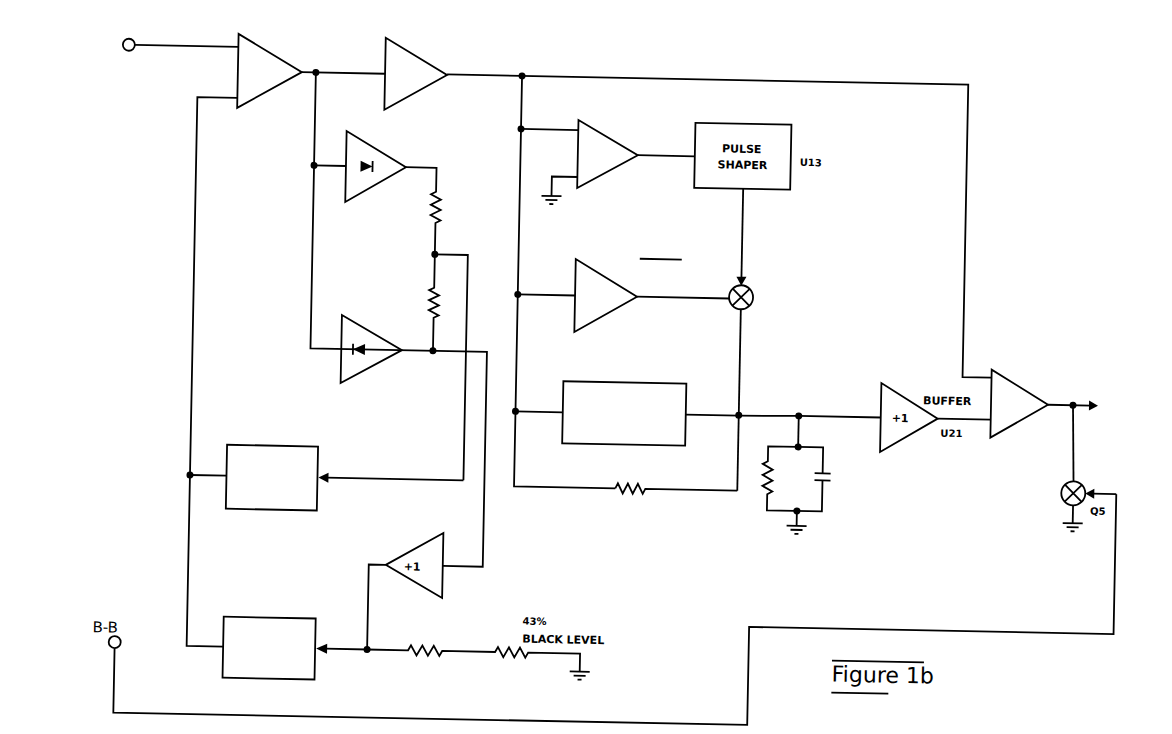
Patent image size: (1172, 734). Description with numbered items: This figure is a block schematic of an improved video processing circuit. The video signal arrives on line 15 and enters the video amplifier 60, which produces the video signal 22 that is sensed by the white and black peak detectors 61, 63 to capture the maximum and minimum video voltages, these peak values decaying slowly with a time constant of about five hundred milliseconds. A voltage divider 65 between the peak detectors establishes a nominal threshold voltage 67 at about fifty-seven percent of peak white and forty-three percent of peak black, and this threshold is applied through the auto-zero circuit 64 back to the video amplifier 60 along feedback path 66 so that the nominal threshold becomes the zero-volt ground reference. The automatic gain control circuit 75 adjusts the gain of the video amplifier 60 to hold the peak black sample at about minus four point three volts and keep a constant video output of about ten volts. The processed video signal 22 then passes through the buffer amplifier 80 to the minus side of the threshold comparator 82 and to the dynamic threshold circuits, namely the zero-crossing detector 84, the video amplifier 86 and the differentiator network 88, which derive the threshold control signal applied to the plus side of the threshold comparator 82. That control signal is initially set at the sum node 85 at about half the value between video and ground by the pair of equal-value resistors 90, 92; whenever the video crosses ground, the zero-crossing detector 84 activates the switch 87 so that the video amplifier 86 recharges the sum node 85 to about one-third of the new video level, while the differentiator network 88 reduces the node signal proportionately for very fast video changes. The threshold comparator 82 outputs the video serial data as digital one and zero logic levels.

The line 15 is at (174, 53).
The video signal 22 is at (313, 78).
The video amplifier 60 is at (250, 96).
The white peak detector 61 is at (343, 205).
The black peak detector 63 is at (362, 297).
The auto-zero circuit 64 is at (322, 505).
The voltage divider 65 is at (420, 260).
The feedback line 66 is at (194, 301).
The nominal threshold voltage 67 is at (465, 264).
The automatic gain control circuit 75 is at (320, 685).
The buffer amplifier 80 is at (396, 50).
The threshold comparator 82 is at (997, 350).
The zero-crossing detector 84 is at (561, 169).
The sum node 85 is at (737, 410).
The video amplifier 86 is at (560, 258).
The switch 87 is at (750, 286).
The differentiator network 88 is at (558, 399).
The resistor 90 is at (641, 496).
The resistor 92 is at (770, 494).